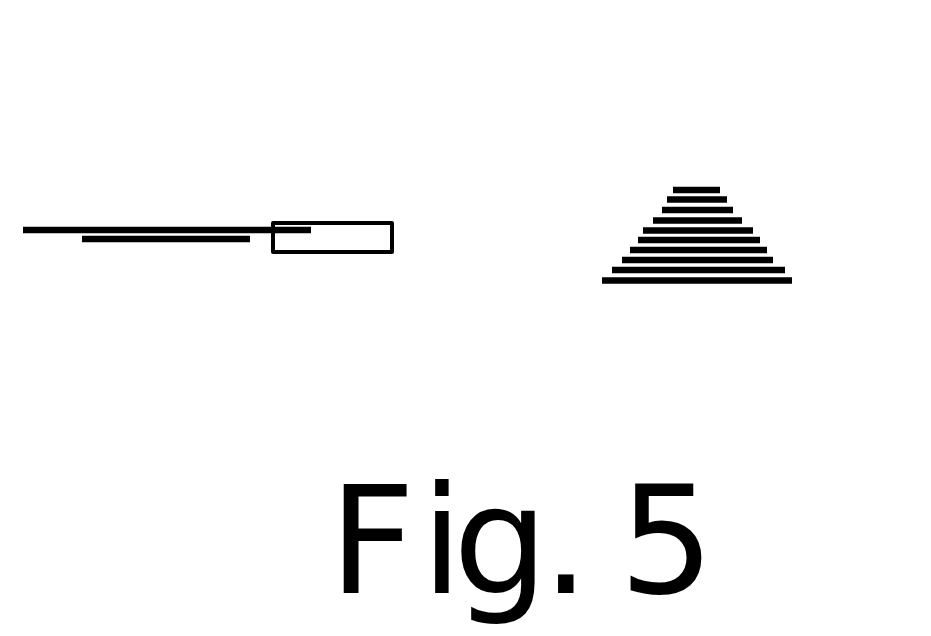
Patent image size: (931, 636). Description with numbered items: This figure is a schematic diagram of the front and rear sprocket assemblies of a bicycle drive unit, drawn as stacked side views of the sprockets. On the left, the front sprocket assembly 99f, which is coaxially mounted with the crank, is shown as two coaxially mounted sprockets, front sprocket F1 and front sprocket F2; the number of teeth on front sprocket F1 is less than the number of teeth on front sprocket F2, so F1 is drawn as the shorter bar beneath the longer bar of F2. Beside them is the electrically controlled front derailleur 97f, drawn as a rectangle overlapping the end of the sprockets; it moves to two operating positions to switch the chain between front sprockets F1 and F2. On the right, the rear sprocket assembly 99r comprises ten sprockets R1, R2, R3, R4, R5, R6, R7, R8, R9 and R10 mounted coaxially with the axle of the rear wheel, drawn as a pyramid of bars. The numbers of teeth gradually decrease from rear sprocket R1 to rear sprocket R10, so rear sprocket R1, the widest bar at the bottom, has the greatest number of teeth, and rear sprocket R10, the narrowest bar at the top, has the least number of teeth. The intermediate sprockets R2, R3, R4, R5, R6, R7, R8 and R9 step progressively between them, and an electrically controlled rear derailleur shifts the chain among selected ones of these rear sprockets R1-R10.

The front sprocket assembly 99f is at (243, 174).
The front derailleur 97f is at (325, 223).
The front sprocket F1 is at (123, 243).
The front sprocket F2 is at (118, 230).
The rear sprocket assembly 99r is at (699, 140).
The rear sprocket R1 is at (602, 283).
The rear sprocket R2 is at (612, 270).
The rear sprocket R3 is at (622, 260).
The rear sprocket R4 is at (630, 250).
The rear sprocket R5 is at (638, 240).
The rear sprocket R6 is at (753, 230).
The rear sprocket R7 is at (742, 221).
The rear sprocket R8 is at (733, 210).
The rear sprocket R9 is at (727, 199).
The rear sprocket R10 is at (720, 187).